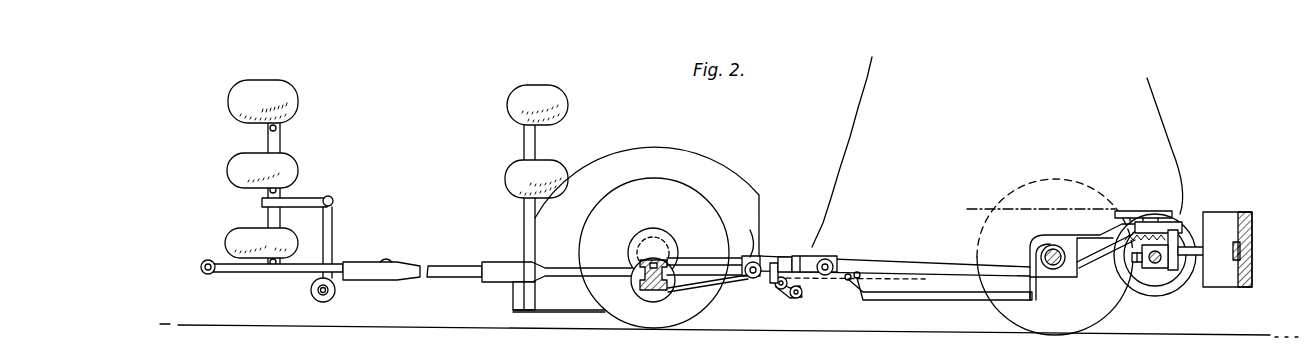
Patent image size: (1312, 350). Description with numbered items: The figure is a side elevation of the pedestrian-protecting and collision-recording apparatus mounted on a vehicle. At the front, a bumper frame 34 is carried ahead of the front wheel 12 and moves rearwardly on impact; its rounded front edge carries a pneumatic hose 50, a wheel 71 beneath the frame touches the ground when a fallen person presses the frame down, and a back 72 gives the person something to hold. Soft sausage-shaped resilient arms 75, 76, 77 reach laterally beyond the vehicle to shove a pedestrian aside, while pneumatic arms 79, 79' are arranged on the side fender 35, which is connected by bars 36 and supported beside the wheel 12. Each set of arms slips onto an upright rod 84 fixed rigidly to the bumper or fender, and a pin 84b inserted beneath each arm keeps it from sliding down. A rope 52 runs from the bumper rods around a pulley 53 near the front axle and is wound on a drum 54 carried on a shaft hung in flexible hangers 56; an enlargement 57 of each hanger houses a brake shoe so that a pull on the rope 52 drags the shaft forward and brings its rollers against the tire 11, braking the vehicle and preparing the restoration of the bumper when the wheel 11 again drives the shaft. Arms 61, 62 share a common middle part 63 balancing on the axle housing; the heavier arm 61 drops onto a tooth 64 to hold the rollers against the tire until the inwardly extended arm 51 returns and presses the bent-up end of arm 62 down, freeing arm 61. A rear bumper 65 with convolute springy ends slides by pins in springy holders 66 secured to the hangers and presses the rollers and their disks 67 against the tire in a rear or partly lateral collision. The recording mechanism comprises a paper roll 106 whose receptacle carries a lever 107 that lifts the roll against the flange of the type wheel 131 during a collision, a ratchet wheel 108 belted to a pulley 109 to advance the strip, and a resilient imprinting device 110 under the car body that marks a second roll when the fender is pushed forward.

The rear wheel tire 11 is at (1025, 310).
The front wheel 12 is at (668, 316).
The front bumper frame 34 is at (240, 268).
The side fender 35 is at (732, 177).
The connecting bar 36 is at (752, 280).
The pneumatic hose 50 is at (206, 262).
The inwardly extended arm of rod 51 is at (862, 277).
The rope 52 is at (690, 258).
The pulley 53 is at (637, 290).
The pulley drum 54 is at (1166, 268).
The flexible hanger 56 is at (1182, 215).
The hanger enlargement 57 is at (1172, 288).
The heavier arm 61 is at (1099, 233).
The lighter arm 62 is at (935, 298).
The common middle part 63 is at (1043, 249).
The tooth 64 is at (1188, 228).
The rear bumper 65 is at (1252, 237).
The springy holder 66 is at (1211, 247).
The disk-like part 67 is at (1148, 294).
The wheel 71 is at (336, 291).
The back 72 is at (331, 197).
The resilient arm 75 is at (296, 95).
The resilient arm 76 is at (291, 159).
The resilient arm 77 is at (231, 233).
The pneumatic arm 79 is at (561, 197).
The pneumatic arm 79' is at (561, 161).
The upright rod 84 is at (277, 128).
The pin 84b is at (270, 192).
The paper roll 106 is at (820, 306).
The lever 107 is at (780, 260).
The ratchet wheel 108 is at (774, 290).
The pulley 109 is at (793, 299).
The imprinting device 110 is at (678, 253).
The type wheel 131 is at (828, 259).